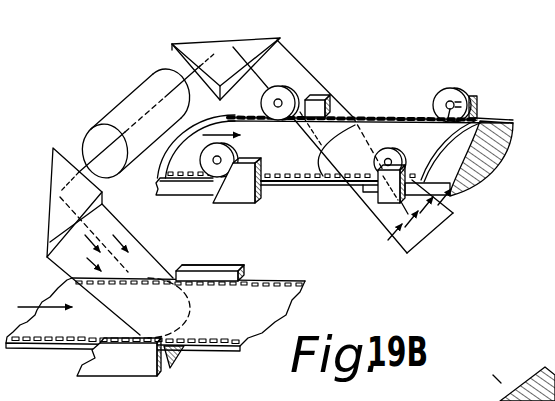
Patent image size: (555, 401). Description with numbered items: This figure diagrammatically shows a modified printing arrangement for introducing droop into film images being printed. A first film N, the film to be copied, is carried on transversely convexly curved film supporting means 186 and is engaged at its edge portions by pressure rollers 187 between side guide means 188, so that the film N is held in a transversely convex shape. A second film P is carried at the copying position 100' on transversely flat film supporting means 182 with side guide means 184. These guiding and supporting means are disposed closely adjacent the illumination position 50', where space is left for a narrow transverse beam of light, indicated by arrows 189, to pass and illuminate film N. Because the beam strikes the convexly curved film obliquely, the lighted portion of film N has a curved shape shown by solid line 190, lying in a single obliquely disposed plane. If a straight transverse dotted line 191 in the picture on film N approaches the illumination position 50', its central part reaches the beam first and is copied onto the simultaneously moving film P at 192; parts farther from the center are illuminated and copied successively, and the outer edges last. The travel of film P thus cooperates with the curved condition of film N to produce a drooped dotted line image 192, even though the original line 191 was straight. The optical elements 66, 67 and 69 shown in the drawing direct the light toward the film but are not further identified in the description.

The lamp / light source cylinder 66 is at (128, 96).
The prism 67 is at (200, 52).
The prism 69 is at (56, 174).
The illumination position 50' is at (370, 85).
The pressure rollers 187 is at (453, 96).
The side guide means 188 is at (480, 108).
The lighted portion of the film 190 is at (337, 152).
The dotted line 191 is at (318, 153).
The transversely convexly curved film supporting means 186 is at (476, 167).
The arrows indicating beam of light 189 is at (423, 233).
The first film N is at (293, 170).
The copying position 100' is at (220, 253).
The side guide means 184 is at (240, 268).
The second film P is at (284, 281).
The dotted line image 192 is at (200, 316).
The transversely flat film supporting means 182 is at (192, 352).